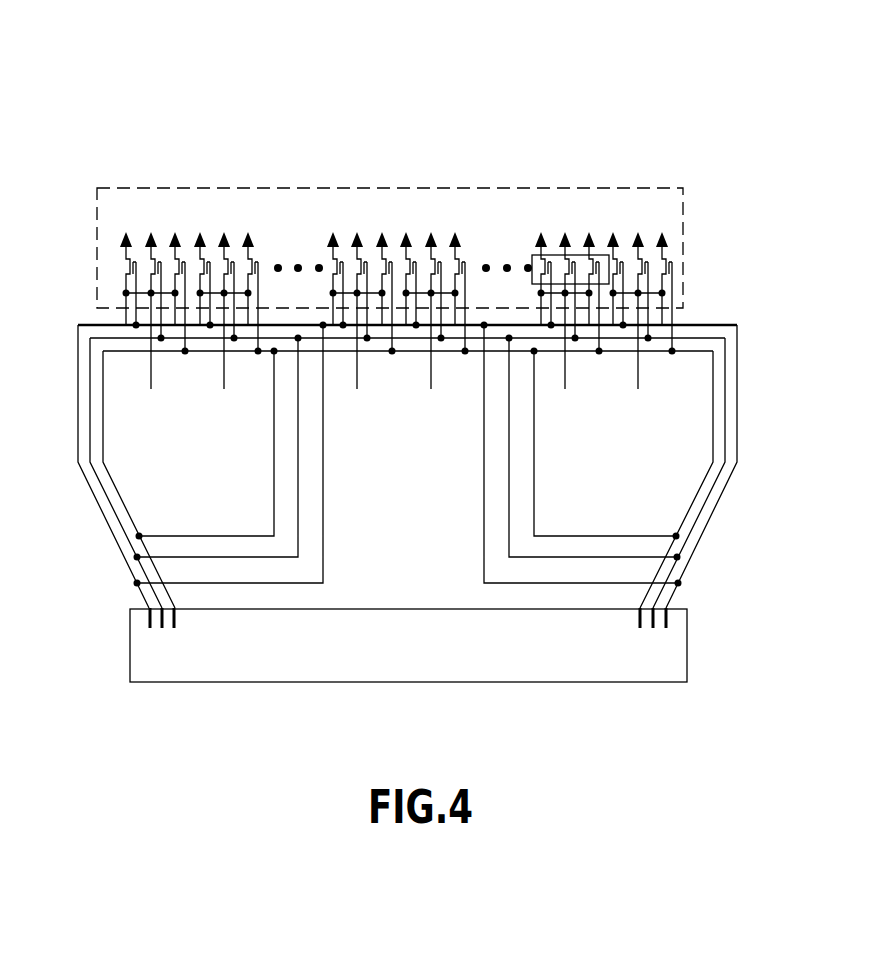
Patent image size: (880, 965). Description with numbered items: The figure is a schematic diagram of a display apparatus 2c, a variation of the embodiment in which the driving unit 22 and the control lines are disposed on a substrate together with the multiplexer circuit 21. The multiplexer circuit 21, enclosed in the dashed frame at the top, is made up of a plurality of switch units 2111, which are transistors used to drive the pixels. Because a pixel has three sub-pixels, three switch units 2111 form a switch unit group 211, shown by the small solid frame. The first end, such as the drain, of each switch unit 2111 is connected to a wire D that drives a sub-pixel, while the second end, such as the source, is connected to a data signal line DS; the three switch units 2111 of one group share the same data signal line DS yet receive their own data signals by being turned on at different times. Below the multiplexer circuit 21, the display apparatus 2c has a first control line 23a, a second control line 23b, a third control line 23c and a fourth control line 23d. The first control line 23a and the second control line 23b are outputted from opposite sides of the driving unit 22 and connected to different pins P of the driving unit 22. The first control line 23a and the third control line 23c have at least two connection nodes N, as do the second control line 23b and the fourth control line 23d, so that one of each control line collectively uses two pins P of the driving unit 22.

The display apparatus 2c is at (157, 55).
The multiplexer circuit 21 is at (320, 188).
The switch unit group 211 is at (550, 254).
The switch unit 2111 is at (128, 266).
The wire D is at (128, 263).
The data signal line DS is at (145, 364).
The connection node N is at (273, 352).
The pin P is at (148, 618).
The driving unit 22 is at (688, 642).
The first control line 23a is at (60, 382).
The second control line 23b is at (752, 373).
The third control line 23c is at (260, 420).
The fourth control line 23d is at (470, 422).